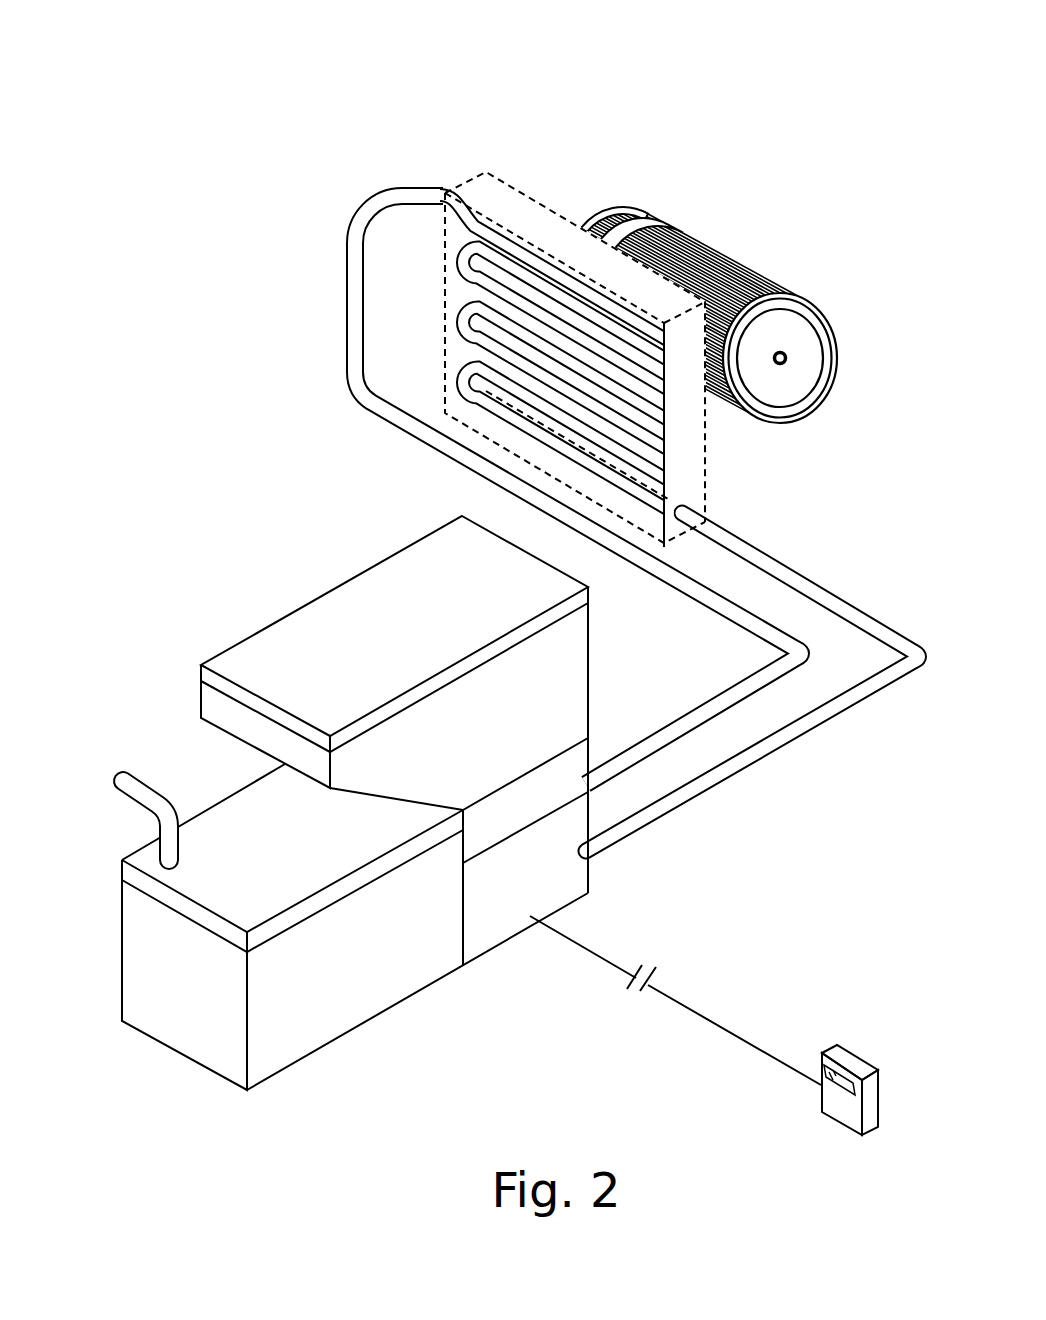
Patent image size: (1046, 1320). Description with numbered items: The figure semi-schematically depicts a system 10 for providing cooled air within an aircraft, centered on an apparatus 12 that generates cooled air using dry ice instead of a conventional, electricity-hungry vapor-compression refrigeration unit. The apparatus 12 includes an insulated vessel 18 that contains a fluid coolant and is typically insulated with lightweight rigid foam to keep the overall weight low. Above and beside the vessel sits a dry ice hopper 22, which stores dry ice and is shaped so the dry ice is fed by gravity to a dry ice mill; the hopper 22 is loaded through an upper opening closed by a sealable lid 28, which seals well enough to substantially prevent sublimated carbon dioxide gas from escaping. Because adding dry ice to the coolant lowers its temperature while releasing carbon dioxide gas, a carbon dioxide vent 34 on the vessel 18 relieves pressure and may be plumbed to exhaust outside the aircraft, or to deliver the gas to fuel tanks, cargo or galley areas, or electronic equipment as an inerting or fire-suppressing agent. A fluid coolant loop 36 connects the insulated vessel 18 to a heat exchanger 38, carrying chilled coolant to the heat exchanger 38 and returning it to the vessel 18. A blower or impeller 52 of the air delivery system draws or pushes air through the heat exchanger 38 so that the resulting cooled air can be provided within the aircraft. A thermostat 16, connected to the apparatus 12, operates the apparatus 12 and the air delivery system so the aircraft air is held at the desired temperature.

The system 10 is at (499, 576).
The apparatus 12 is at (369, 786).
The thermostat 16 is at (879, 1096).
The insulated vessel 18 is at (122, 968).
The dry ice hopper 22 is at (589, 628).
The sealable lid 28 is at (261, 652).
The carbon dioxide vent 34 is at (145, 778).
The fluid coolant loop 36 is at (347, 300).
The heat exchanger 38 is at (447, 322).
The blower or impeller 52 is at (622, 206).